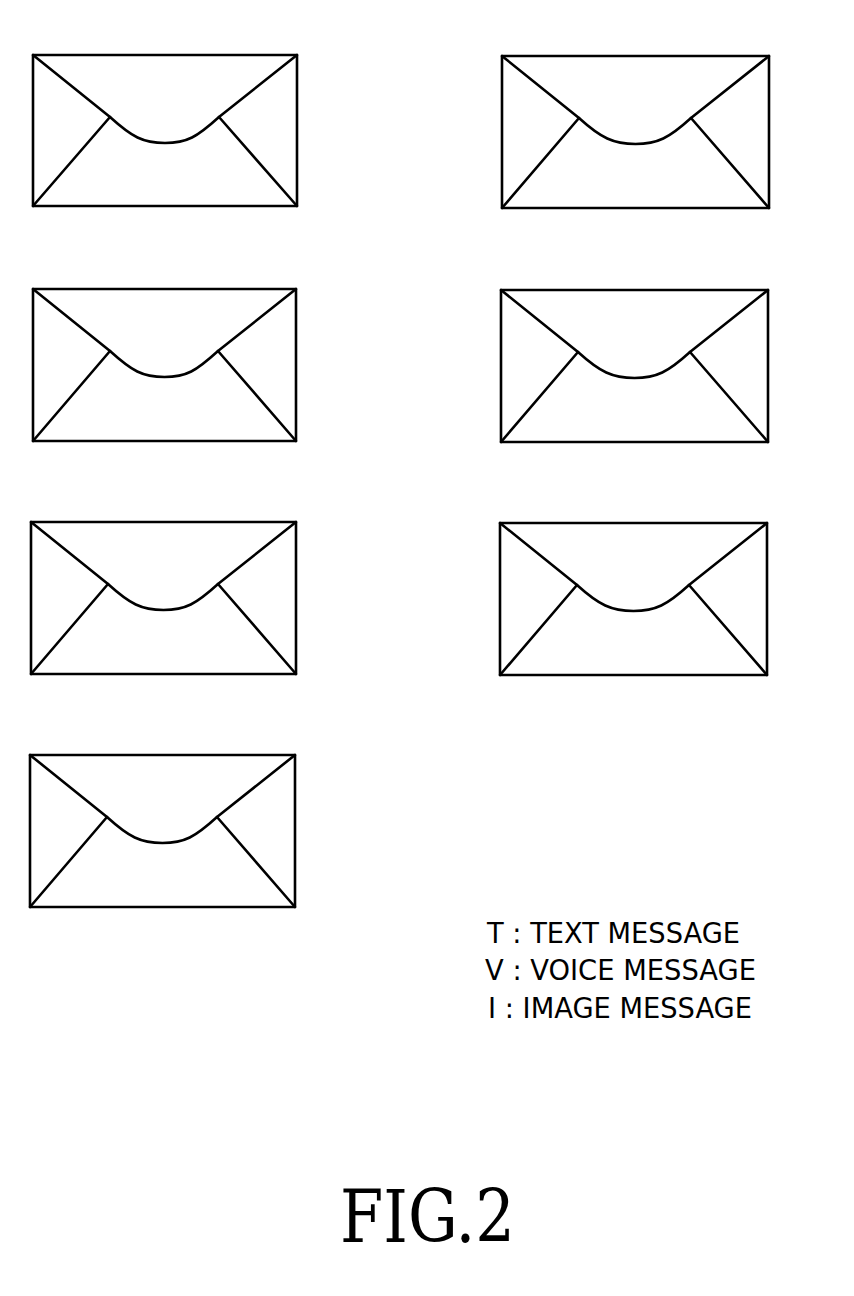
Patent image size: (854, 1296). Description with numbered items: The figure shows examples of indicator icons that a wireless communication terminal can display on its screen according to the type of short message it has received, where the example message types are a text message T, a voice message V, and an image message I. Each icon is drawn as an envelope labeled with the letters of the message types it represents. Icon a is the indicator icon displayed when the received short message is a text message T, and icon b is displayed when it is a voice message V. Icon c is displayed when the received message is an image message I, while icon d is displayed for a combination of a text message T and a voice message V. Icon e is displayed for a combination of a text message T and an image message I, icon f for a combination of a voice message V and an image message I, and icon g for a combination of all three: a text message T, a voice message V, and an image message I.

The indicator icon a is at (297, 130).
The indicator icon b is at (769, 131).
The indicator icon c is at (296, 364).
The indicator icon d is at (768, 365).
The indicator icon e is at (296, 597).
The indicator icon f is at (767, 598).
The indicator icon g is at (295, 830).